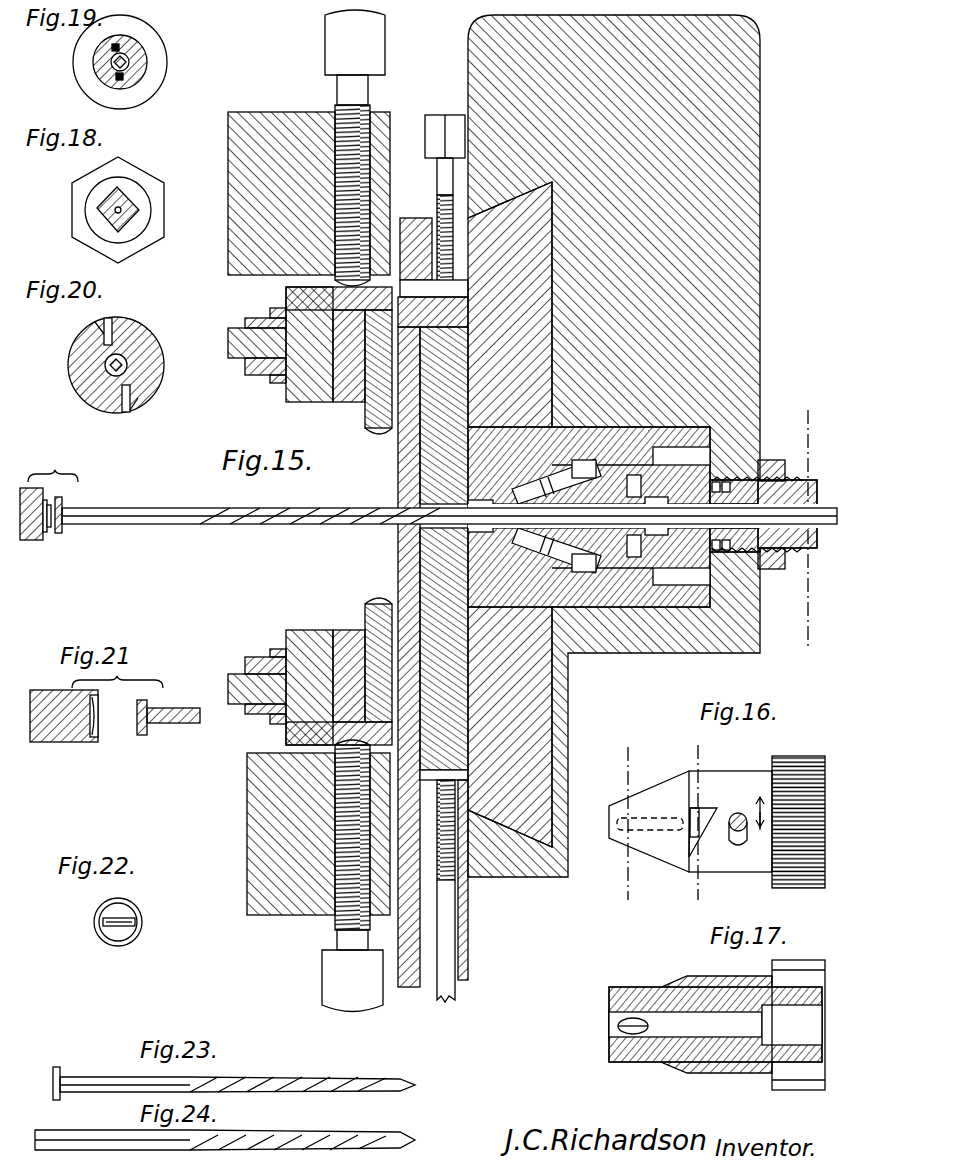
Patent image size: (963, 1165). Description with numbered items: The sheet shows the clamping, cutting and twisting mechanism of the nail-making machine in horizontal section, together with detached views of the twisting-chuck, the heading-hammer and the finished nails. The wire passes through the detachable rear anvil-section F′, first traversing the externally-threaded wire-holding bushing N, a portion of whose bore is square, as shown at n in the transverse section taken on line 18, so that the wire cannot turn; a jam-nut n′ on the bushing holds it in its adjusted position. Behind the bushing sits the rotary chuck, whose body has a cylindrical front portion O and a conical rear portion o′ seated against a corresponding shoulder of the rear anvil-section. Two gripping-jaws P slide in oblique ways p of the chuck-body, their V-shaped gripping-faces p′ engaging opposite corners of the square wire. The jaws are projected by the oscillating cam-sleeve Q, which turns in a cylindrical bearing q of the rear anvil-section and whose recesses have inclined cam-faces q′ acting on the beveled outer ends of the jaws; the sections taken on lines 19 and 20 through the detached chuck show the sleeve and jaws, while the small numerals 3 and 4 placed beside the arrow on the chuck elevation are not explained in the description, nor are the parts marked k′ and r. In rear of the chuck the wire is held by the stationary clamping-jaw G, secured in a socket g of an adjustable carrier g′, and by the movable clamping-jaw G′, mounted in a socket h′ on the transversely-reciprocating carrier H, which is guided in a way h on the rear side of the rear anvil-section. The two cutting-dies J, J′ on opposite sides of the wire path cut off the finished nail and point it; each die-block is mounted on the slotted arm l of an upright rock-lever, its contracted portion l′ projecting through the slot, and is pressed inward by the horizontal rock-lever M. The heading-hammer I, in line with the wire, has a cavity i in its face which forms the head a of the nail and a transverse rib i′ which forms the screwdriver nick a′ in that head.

In FIG. 15, the rear anvil-section F′ is at (742, 143).
In FIG. 15, the horizontal rock-lever M is at (238, 103).
In FIG. 15, the socket g is at (398, 455).
In FIG. 15, the adjustable carrier g′ is at (392, 435).
In FIG. 15, the stationary clamping-jaw G is at (435, 470).
In FIG. 15, the movable clamping-jaw G′ is at (435, 552).
In FIG. 15, the way h is at (468, 775).
In FIG. 15, the socket h′ is at (398, 595).
In FIG. 15, the transversely-reciprocating carrier H is at (470, 940).
In FIG. 15, the bifurcated arm l is at (286, 292).
In FIG. 15, the contracted portion l′ is at (290, 395).
In FIG. 19, the clutch piece k′ is at (140, 52).
In FIG. 15, the clutch piece k′ is at (335, 395).
In FIG. 15, the cutting-die J is at (372, 405).
In FIG. 15, the cutting-die J′ is at (372, 630).
In FIG. 15, the heading-hammer I is at (30, 472).
In FIG. 21, the heading-hammer I is at (96, 721).
In FIG. 22, the heading-hammer I is at (62, 950).
In FIG. 15, the cavity i is at (45, 532).
In FIG. 21, the cavity i is at (96, 740).
In FIG. 22, the cavity i is at (120, 940).
In FIG. 19, the transverse rib i′ is at (138, 70).
In FIG. 15, the transverse rib i′ is at (50, 527).
In FIG. 21, the transverse rib i′ is at (98, 720).
In FIG. 15, the head a is at (62, 533).
In FIG. 21, the head a is at (147, 732).
In FIG. 23, the head a is at (56, 1067).
In FIG. 15, the transverse groove a′ is at (62, 503).
In FIG. 21, the transverse groove a′ is at (137, 708).
In FIG. 20, the cylindrical front portion O is at (70, 365).
In FIG. 15, the cylindrical front portion O is at (622, 607).
In FIG. 17, the cylindrical front portion O is at (822, 996).
In FIG. 19, the conical rear portion o′ is at (73, 66).
In FIG. 15, the conical rear portion o′ is at (460, 538).
In FIG. 16, the conical rear portion o′ is at (655, 830).
In FIG. 17, the conical rear portion o′ is at (638, 1063).
In FIG. 15, the oblique ways p is at (536, 486).
In FIG. 17, the oblique ways p is at (618, 1026).
In FIG. 17, the V-shaped gripping-faces p′ is at (630, 1018).
In FIG. 19, the gripping-jaw P is at (116, 44).
In FIG. 20, the gripping-jaw P is at (128, 318).
In FIG. 15, the gripping-jaw P is at (490, 494).
In FIG. 16, the gripping-jaw P is at (692, 836).
In FIG. 20, the cam-sleeve Q is at (70, 345).
In FIG. 15, the cam-sleeve Q is at (595, 580).
In FIG. 16, the cam-sleeve Q is at (690, 812).
In FIG. 17, the cam-sleeve Q is at (730, 976).
In FIG. 15, the cylindrical bearing q is at (600, 590).
In FIG. 16, the cylindrical bearing q is at (738, 813).
In FIG. 16, the cam-face q′ is at (702, 845).
In FIG. 15, the knurled ring r is at (700, 430).
In FIG. 16, the knurled ring r is at (798, 811).
In FIG. 17, the knurled ring r is at (812, 1090).
In FIG. 18, the wire-holding bushing N is at (137, 213).
In FIG. 15, the wire-holding bushing N is at (815, 495).
In FIG. 18, the holding-seat n is at (100, 213).
In FIG. 15, the holding-seat n is at (812, 540).
In FIG. 18, the jam-nut n′ is at (142, 175).
In FIG. 15, the jam-nut n′ is at (770, 462).
In FIG. 15, the section line 18 is at (816, 522).
In FIG. 16, the section line 19 is at (625, 825).
In FIG. 16, the section line 20 is at (696, 822).
In FIG. 16, the section line 3 is at (761, 804).
In FIG. 16, the section line 4 is at (761, 828).